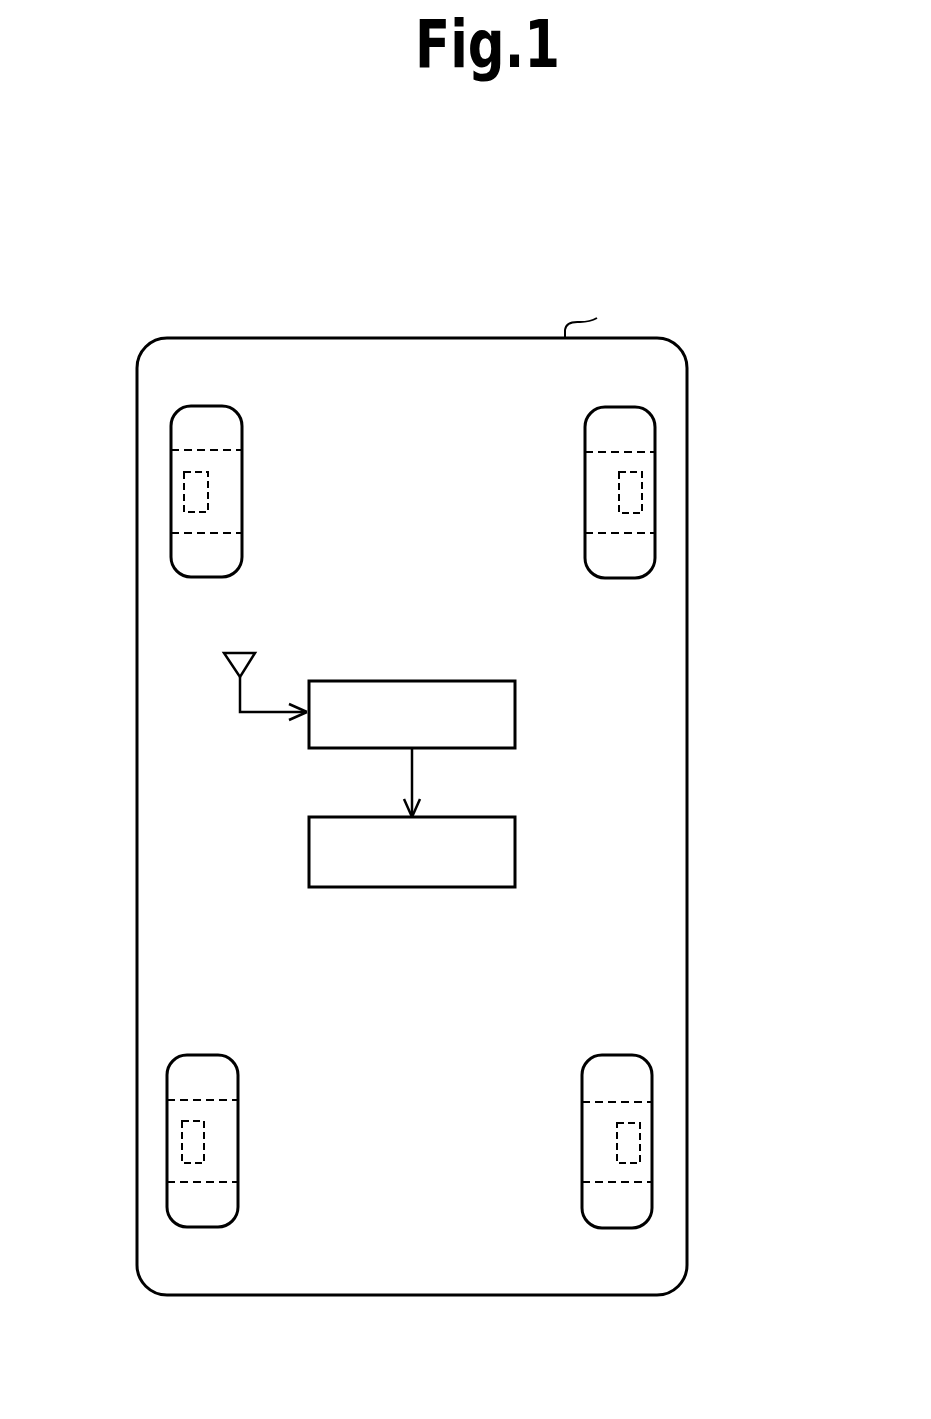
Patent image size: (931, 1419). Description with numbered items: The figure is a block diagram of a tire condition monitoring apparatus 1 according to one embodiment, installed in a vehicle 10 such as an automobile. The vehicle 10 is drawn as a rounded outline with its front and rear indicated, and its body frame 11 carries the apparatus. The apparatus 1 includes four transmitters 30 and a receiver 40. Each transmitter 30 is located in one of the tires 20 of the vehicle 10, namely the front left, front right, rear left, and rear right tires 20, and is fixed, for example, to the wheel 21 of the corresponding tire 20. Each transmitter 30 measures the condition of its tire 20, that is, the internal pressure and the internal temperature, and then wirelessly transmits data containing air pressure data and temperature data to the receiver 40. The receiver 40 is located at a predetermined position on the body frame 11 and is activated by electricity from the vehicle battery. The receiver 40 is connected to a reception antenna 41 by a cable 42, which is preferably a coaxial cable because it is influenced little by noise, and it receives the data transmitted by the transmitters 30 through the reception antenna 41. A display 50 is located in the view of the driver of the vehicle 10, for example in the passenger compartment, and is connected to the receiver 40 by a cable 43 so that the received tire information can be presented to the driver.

The tire condition monitoring apparatus 1 is at (756, 272).
The vehicle 10 is at (315, 338).
The body frame 11 is at (603, 317).
The tire 20 is at (186, 432).
The wheel 21 is at (198, 535).
The transmitter 30 is at (184, 492).
The receiver 40 is at (516, 711).
The reception antenna 41 is at (230, 668).
The cable 42 is at (254, 713).
The cable 43 is at (413, 782).
The display 50 is at (516, 849).